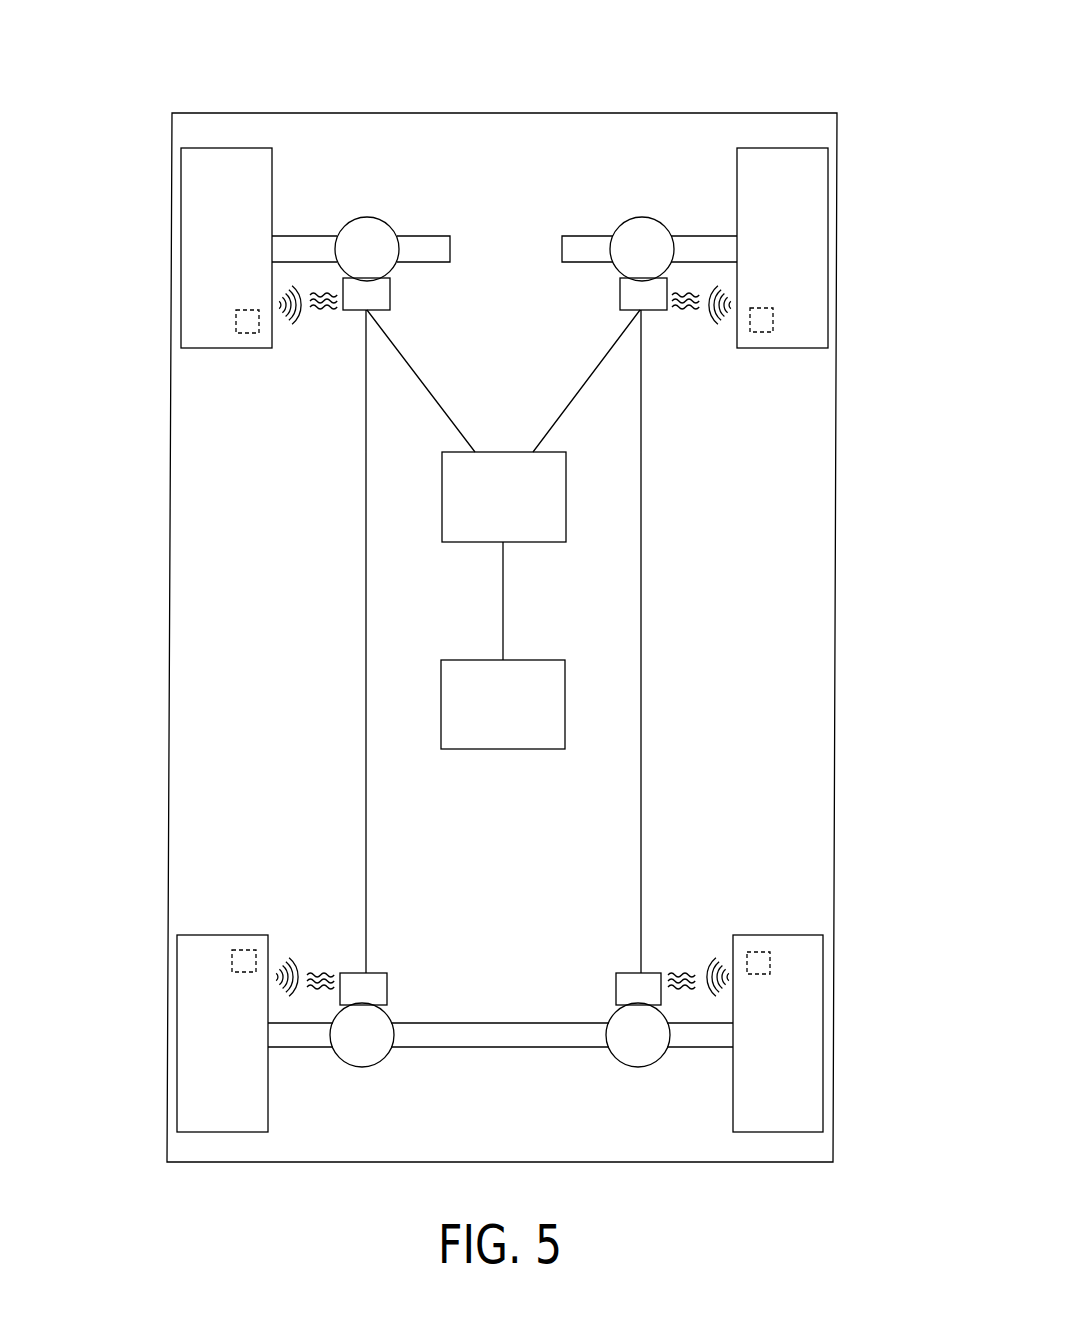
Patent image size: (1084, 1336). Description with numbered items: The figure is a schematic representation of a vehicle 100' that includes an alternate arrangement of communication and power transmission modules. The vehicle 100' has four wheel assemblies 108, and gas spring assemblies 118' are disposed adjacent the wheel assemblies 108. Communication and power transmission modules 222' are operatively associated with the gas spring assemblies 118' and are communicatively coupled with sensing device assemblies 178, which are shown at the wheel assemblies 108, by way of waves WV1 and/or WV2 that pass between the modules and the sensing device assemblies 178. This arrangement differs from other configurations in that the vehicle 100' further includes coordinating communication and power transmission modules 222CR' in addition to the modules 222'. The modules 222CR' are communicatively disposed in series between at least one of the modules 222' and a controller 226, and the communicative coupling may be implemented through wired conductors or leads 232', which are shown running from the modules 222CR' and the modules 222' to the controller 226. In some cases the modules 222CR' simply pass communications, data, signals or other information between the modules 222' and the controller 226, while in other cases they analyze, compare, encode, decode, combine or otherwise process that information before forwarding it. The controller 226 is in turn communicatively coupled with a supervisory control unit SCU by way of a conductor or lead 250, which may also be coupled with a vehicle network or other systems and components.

The vehicle 100' is at (502, 581).
The wheel assembly 108 is at (195, 208).
The sensing device assembly 178 is at (232, 316).
The gas spring assembly 118' is at (502, 641).
The coordinating communication and power transmission module 222CR' is at (505, 252).
The communication and power transmission module 222' is at (500, 965).
The conductor or lead 232' is at (506, 641).
The controller 226 is at (526, 514).
The supervisory control unit SCU is at (529, 722).
The conductor or lead 250 is at (505, 600).
The wave WV1 is at (324, 320).
The wave WV2 is at (295, 327).